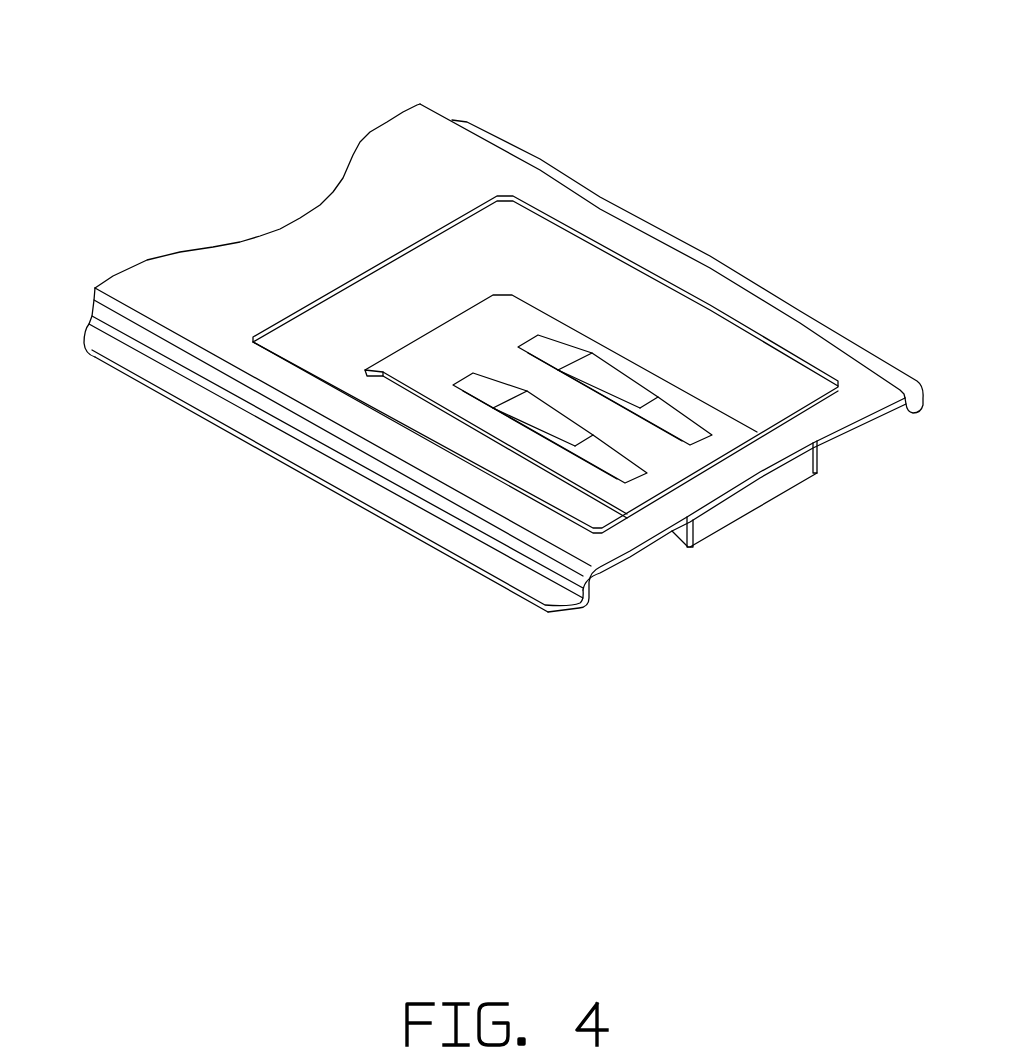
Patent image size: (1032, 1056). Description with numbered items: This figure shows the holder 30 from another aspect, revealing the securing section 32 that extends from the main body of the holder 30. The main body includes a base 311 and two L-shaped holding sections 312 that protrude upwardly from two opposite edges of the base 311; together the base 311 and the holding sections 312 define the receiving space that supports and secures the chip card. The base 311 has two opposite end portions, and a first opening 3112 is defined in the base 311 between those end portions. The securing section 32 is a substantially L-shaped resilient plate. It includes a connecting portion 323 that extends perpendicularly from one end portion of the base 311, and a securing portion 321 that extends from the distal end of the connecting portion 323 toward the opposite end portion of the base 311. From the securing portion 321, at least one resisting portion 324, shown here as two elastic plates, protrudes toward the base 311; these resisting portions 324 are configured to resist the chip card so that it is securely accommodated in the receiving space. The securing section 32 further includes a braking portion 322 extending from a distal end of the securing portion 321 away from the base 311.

The holder 30 is at (183, 107).
The base 311 is at (757, 318).
The first opening 3112 is at (592, 285).
The L-shaped holding sections 312 is at (210, 370).
The securing section 32 is at (463, 677).
The securing portion 321 is at (480, 423).
The braking portion 322 is at (390, 373).
The connecting portion 323 is at (695, 530).
The resisting portions 324 is at (552, 420).